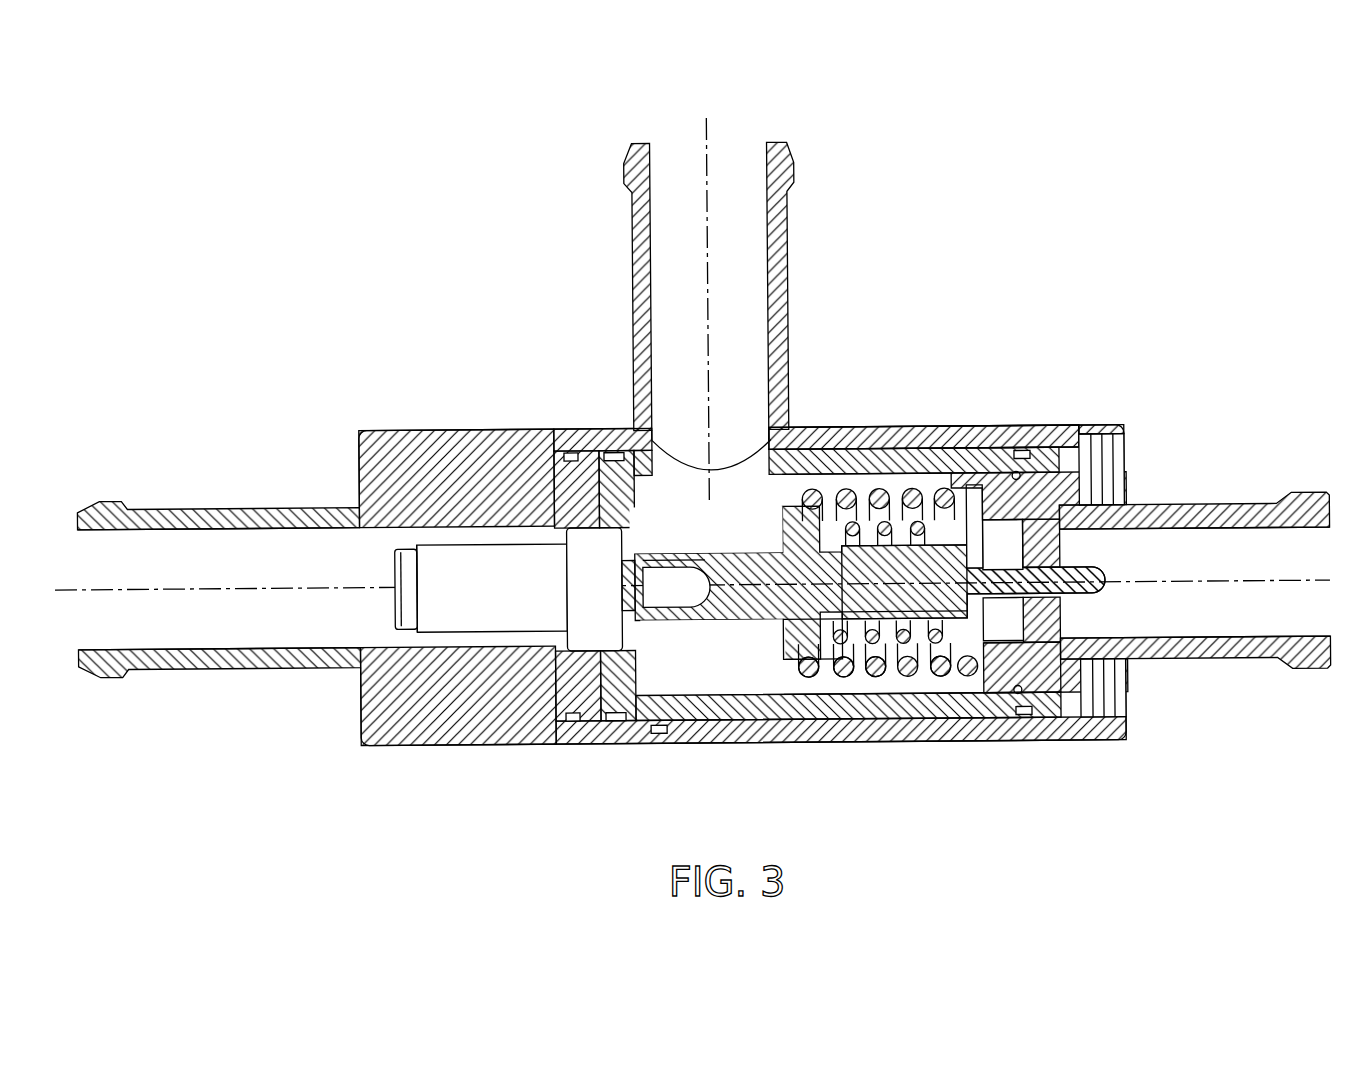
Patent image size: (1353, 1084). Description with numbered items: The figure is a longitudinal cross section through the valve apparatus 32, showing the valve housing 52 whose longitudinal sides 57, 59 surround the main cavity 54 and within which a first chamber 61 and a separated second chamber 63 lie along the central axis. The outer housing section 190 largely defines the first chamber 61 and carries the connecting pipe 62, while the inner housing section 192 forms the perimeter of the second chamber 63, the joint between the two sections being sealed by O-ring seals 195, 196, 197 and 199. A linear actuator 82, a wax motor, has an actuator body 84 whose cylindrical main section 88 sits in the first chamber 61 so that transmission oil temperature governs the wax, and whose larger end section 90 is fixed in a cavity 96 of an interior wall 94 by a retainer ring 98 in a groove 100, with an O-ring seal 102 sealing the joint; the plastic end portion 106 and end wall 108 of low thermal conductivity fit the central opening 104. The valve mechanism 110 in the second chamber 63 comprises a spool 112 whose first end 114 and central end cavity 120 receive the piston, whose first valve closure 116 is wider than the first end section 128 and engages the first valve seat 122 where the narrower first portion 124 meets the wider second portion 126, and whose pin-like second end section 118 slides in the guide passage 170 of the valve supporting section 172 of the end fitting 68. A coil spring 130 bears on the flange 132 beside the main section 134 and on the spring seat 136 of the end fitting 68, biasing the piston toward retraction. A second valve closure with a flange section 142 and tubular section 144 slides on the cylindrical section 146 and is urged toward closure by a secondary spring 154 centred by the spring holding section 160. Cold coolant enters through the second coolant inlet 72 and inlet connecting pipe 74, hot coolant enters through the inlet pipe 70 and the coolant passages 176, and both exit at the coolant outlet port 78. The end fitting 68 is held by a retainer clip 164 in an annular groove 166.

The valve apparatus 32 is at (932, 387).
The valve housing 52 is at (480, 428).
The main cavity 54 is at (827, 470).
The longitudinal side 57 is at (565, 428).
The longitudinal side 59 is at (1087, 741).
The first chamber 61 is at (453, 640).
The connecting pipe 62 is at (262, 512).
The second chamber 63 is at (937, 423).
The end fitting 68 is at (1063, 677).
The inlet pipe 70 is at (1197, 510).
The second coolant inlet 72 is at (733, 437).
The inlet connecting pipe 74 is at (790, 290).
The coolant outlet port 78 is at (897, 478).
The linear actuator 82 is at (432, 605).
The actuator body 84 is at (420, 428).
The cylindrical main section 88 is at (467, 562).
The end section 90 is at (597, 598).
The interior wall 94 is at (600, 532).
The cavity 96 is at (622, 742).
The retainer ring 98 is at (532, 428).
The groove 100 is at (500, 428).
The O-ring seal 102 is at (523, 742).
The central opening 104 is at (650, 545).
The plastic end portion 106 is at (658, 742).
The end wall 108 is at (640, 565).
The valve mechanism 110 is at (808, 472).
The spool 112 is at (903, 742).
The first end 114 is at (698, 600).
The first valve closure 116 is at (788, 488).
The second end section 118 is at (1087, 577).
The central end cavity 120 is at (608, 594).
The first valve seat 122 is at (758, 742).
The first portion 124 is at (672, 742).
The second portion 126 is at (890, 742).
The first end section 128 is at (735, 593).
The coil spring 130 is at (923, 742).
The flange 132 is at (837, 742).
The main section 134 is at (850, 742).
The spring seat 136 is at (1043, 740).
The flange section 142 is at (953, 740).
The tubular section 144 is at (953, 745).
The cylindrical section 146 is at (863, 742).
The secondary spring 154 is at (940, 742).
The spring holding section 160 is at (878, 470).
The retainer clip 164 is at (1112, 478).
The annular groove 166 is at (1087, 695).
The guide passage 170 is at (1032, 565).
The valve supporting section 172 is at (1030, 606).
The coolant passages 176 is at (1040, 625).
The outer housing section 190 is at (380, 428).
The inner housing section 192 is at (1000, 452).
The O-ring seal 195 is at (563, 742).
The O-ring seal 196 is at (590, 735).
The O-ring seal 197 is at (1065, 430).
The O-ring seal 199 is at (820, 742).